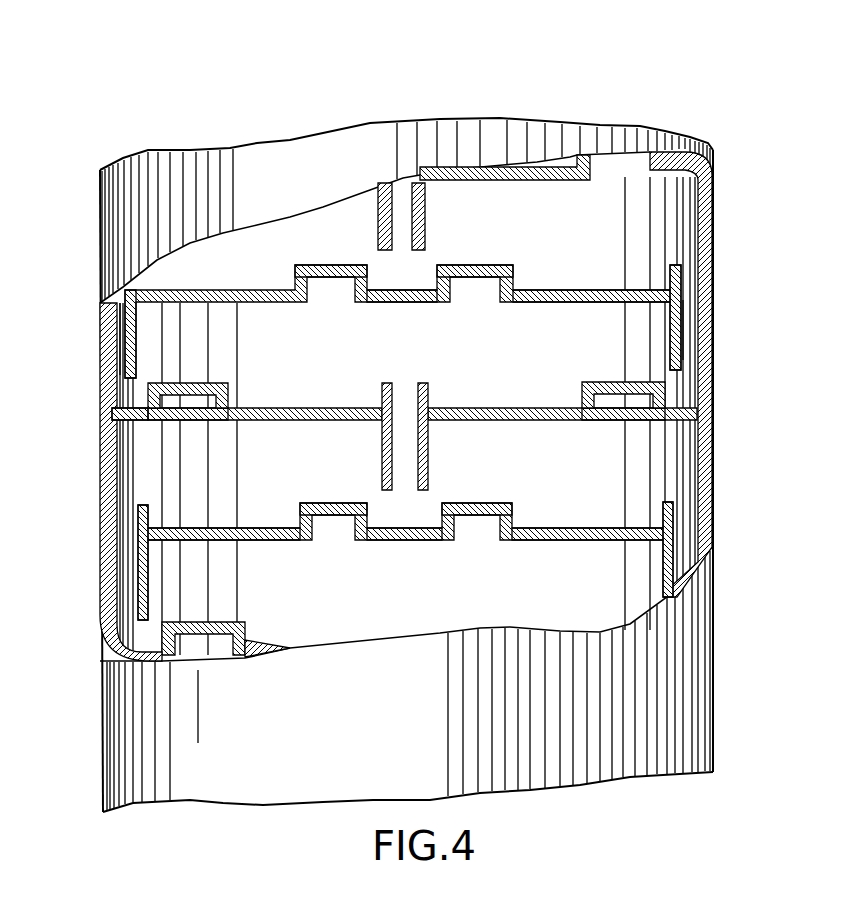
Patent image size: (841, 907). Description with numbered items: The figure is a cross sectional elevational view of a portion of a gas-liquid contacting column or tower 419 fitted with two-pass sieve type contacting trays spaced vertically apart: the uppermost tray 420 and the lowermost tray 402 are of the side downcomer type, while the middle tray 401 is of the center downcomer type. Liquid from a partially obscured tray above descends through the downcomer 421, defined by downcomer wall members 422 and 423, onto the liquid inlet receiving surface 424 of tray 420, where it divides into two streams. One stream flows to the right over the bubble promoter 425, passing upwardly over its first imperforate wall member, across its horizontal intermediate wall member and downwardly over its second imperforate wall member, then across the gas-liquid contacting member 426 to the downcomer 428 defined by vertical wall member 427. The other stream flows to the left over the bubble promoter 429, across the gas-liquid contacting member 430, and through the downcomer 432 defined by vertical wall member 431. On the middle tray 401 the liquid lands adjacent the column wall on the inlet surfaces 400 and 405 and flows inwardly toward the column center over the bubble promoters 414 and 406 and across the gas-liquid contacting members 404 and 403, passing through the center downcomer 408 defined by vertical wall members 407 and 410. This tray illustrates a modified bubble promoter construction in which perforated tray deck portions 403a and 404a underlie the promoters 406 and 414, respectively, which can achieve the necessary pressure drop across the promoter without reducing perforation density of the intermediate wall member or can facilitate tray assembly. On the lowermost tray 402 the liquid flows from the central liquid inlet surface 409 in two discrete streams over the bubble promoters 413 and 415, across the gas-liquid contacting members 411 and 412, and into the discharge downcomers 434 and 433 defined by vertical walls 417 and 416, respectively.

The inlet surface 400 is at (399, 419).
The middle tray 401 is at (404, 421).
The lowermost tray 402 is at (406, 563).
The gas-liquid contacting member 403 is at (307, 407).
The perforated tray deck portion 403a is at (197, 421).
The gas-liquid contacting member 404 is at (497, 407).
The perforated tray deck portion 404a is at (606, 421).
The inlet surface 405 is at (124, 410).
The bubble promoter 406 is at (218, 385).
The vertical wall member 407 is at (382, 447).
The downcomer 408 is at (405, 419).
The central liquid inlet surface 409 is at (399, 541).
The vertical wall member 410 is at (429, 447).
The gas-liquid contacting member 411 is at (226, 528).
The gas-liquid contacting member 412 is at (566, 541).
The bubble promoter 413 is at (316, 540).
The bubble promoter 414 is at (598, 382).
The bubble promoter 415 is at (474, 528).
The vertical wall 416 is at (672, 555).
The vertical wall 417 is at (138, 607).
The gas-liquid contacting column 419 is at (98, 223).
The uppermost tray 420 is at (591, 294).
The downcomer 421 is at (456, 172).
The downcomer wall member 422 is at (378, 210).
The downcomer wall member 423 is at (425, 213).
The liquid inlet receiving surface 424 is at (393, 303).
The bubble promoter 425 is at (462, 300).
The gas-liquid contacting member 426 is at (553, 303).
The vertical wall member 427 is at (683, 350).
The downcomer 428 is at (692, 313).
The bubble promoter 429 is at (323, 292).
The gas-liquid contacting member 430 is at (399, 317).
The vertical wall member 431 is at (127, 357).
The downcomer 432 is at (122, 330).
The discharge downcomer 433 is at (690, 517).
The discharge downcomer 434 is at (120, 584).